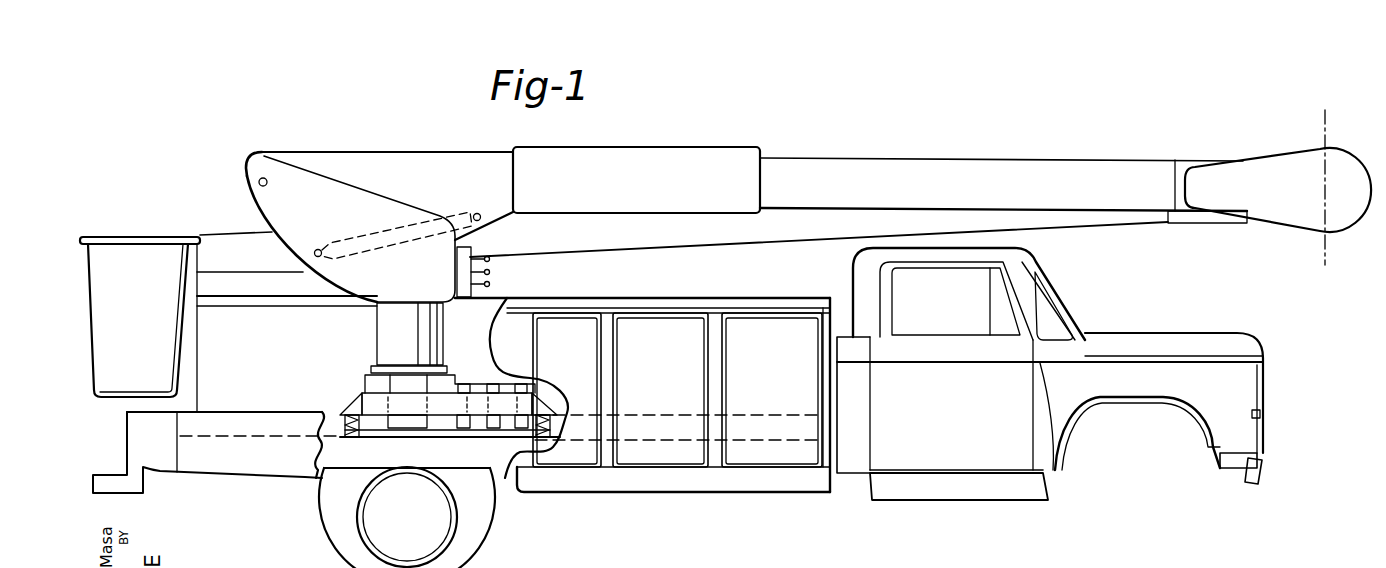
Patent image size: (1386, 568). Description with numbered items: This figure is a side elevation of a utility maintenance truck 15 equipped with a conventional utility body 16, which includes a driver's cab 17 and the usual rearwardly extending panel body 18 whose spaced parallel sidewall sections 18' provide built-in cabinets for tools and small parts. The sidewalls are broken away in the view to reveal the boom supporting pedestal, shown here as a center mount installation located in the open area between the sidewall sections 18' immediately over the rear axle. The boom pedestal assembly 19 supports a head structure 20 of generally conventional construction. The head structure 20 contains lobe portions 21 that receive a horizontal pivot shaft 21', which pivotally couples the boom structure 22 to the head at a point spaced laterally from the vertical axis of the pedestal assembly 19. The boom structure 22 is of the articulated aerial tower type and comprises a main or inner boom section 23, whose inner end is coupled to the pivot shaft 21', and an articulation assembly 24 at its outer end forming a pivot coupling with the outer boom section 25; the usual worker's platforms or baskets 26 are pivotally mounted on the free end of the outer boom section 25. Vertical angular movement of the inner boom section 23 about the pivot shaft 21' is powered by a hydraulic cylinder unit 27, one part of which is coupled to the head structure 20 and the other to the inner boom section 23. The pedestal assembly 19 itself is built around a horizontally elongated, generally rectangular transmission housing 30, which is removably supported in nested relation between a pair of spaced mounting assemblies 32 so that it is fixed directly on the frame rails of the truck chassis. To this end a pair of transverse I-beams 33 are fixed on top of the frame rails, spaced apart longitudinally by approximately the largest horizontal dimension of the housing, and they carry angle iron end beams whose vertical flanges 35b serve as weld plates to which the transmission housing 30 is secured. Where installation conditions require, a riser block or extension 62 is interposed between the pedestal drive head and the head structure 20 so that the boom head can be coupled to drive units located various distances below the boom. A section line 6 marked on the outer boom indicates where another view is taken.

The section line 6- 6 is at (1384, 122).
The utility maintenance truck 15 is at (763, 500).
The utility body 16 is at (688, 488).
The driver's cab 17 is at (1057, 293).
The panel body 18 is at (677, 367).
The sidewall sections 18' is at (668, 286).
The boom pedestal assembly 19 is at (375, 323).
The head structure 20 is at (328, 285).
The lobe portions 21 is at (228, 180).
The horizontal pivot shaft 21' is at (240, 158).
The boom structure 22 is at (1003, 160).
The inner boom section 23 is at (845, 162).
The articulation assembly 24 is at (1286, 161).
The outer boom section 25 is at (777, 236).
The worker's platforms or baskets 26 is at (104, 370).
The hydraulic cylinder unit 27 is at (405, 225).
The transmission housing 30 is at (366, 378).
The mounting assemblies 32 is at (343, 405).
The transverse I-beams 33 is at (372, 443).
The vertical flanges 35b is at (549, 373).
The riser block or extension 62 is at (370, 349).